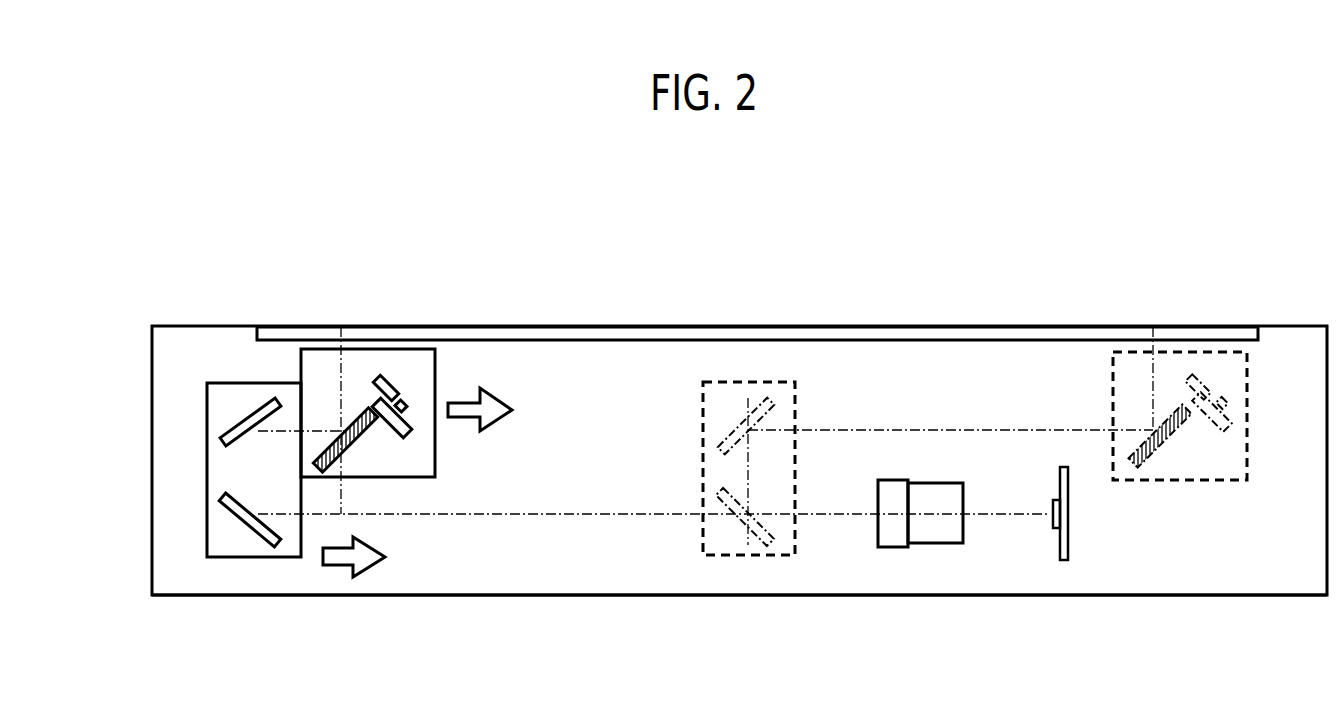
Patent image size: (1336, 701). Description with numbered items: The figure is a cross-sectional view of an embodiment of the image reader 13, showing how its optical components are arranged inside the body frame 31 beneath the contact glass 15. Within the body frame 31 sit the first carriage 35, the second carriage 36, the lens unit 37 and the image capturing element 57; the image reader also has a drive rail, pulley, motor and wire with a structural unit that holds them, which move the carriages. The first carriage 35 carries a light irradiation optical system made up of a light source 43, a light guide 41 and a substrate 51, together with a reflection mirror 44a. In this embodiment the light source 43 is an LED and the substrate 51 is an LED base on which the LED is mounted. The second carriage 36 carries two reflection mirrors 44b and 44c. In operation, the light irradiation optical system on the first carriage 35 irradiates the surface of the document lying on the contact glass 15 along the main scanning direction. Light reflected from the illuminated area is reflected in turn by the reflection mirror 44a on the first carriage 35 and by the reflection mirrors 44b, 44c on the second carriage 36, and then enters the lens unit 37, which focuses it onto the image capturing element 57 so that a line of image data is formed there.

The image reader 13 is at (143, 433).
The contact glass 15 is at (611, 327).
The body frame 31 is at (178, 595).
The first carriage 35 is at (435, 460).
The second carriage 36 is at (212, 383).
The lens unit 37 is at (930, 547).
The light guide 41 is at (390, 380).
The light source 43 is at (405, 400).
The reflection mirror 44a is at (362, 442).
The reflection mirror 44b is at (243, 415).
The reflection mirror 44c is at (249, 535).
The substrate 51 is at (420, 420).
The image capturing element 57 is at (1068, 545).